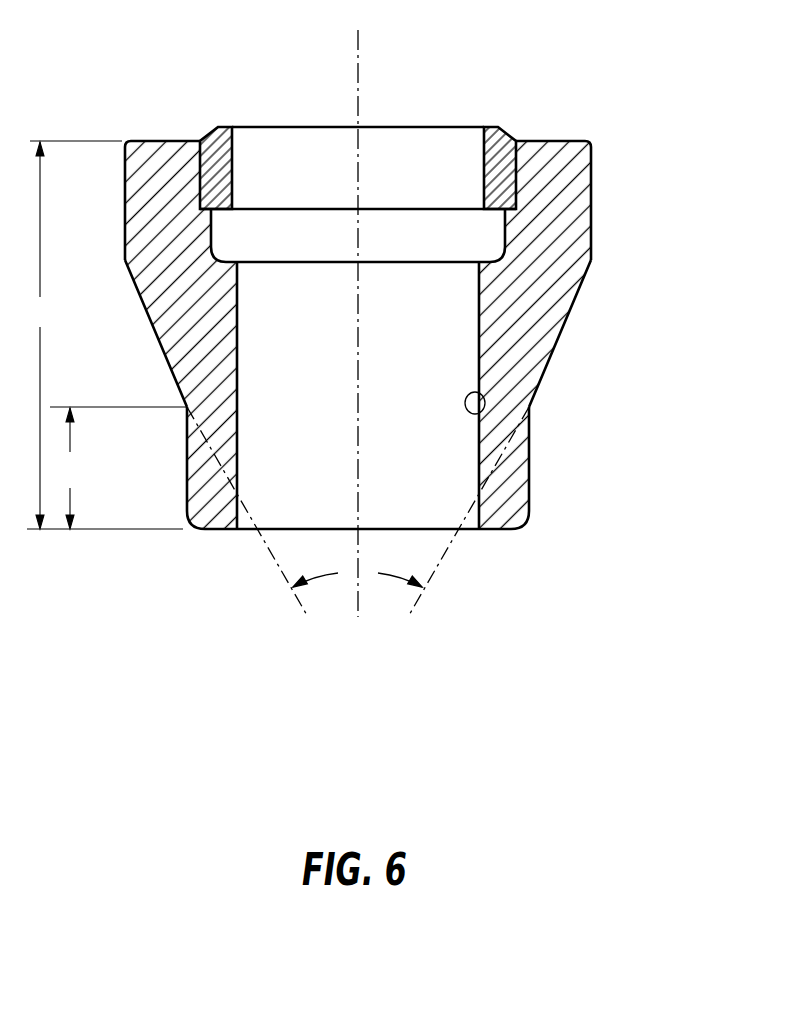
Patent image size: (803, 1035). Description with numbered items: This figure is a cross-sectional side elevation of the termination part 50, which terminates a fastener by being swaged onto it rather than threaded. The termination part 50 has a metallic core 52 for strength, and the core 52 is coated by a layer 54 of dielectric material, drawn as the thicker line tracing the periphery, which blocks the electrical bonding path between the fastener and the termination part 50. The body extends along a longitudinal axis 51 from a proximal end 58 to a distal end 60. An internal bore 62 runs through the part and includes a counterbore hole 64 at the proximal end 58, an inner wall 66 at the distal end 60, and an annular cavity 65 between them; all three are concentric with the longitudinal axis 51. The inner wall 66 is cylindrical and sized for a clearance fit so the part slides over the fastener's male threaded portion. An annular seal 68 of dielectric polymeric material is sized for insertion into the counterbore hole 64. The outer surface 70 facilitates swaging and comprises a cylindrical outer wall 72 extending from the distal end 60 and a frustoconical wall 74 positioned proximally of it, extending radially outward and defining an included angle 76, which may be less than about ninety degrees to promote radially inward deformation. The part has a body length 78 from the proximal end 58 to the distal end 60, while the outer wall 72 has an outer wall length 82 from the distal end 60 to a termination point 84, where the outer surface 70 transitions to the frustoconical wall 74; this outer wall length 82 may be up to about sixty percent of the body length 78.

The termination part 50 is at (384, 334).
The longitudinal axis 51 is at (358, 63).
The core 52 is at (535, 326).
The layer of dielectric material 54 is at (592, 257).
The proximal end 58 is at (560, 141).
The distal end 60 is at (492, 531).
The internal bore 62 is at (293, 295).
The counterbore hole 64 is at (505, 163).
The cavity 65 is at (213, 247).
The inner wall 66 is at (483, 395).
The seal 68 is at (218, 152).
The outer surface 70 is at (124, 192).
The outer wall 72 is at (529, 478).
The frustoconical wall 74 is at (150, 318).
The included angle 76 is at (358, 512).
The body length 78 is at (105, 335).
The outer wall length 82 is at (118, 468).
The termination point 84 is at (187, 410).